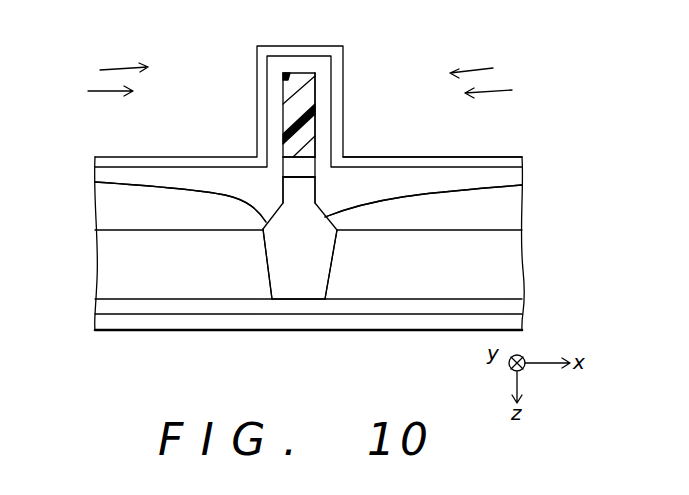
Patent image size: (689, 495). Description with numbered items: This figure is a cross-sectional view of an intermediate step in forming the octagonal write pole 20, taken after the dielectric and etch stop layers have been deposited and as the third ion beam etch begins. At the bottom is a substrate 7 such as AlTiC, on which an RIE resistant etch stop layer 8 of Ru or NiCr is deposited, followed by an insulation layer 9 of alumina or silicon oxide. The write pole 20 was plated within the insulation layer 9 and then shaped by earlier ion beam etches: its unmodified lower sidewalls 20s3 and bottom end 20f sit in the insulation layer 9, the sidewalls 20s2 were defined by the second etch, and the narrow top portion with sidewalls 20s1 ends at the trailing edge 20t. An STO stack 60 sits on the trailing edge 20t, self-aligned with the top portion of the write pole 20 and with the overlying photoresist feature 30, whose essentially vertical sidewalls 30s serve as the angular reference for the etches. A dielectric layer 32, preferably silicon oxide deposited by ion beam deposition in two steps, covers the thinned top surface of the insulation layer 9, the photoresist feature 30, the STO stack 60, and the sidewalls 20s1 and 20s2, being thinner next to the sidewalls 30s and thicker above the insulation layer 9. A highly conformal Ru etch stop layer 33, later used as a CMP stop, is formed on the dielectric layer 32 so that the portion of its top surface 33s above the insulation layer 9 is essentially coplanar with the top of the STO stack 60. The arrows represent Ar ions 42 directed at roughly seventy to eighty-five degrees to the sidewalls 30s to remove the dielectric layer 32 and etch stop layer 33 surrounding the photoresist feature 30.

The substrate 7 is at (510, 325).
The etch stop layer 8 is at (510, 305).
The insulation layer 9 is at (110, 277).
The write pole 20 is at (285, 283).
The bottom end of main pole 20f is at (313, 292).
The sidewalls of top portion of write pole 20s1 is at (283, 190).
The sidewalls 20s2 is at (95, 182).
The sidewalls 20s3 is at (267, 273).
The trailing edge 20t is at (308, 177).
The photoresist feature 30 is at (292, 90).
The sidewalls of photoresist feature 30s is at (315, 98).
The dielectric layer 32 is at (110, 205).
The etch stop layer 33 is at (95, 161).
The top surface of etch stop layer 33s is at (497, 157).
The Ar ions 42 is at (302, 81).
The STO stack 60 is at (290, 168).